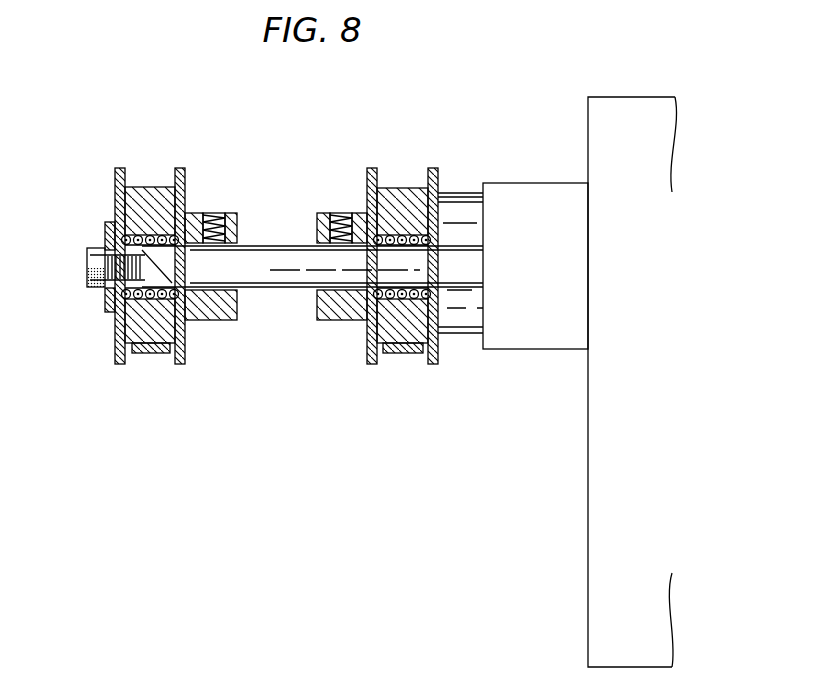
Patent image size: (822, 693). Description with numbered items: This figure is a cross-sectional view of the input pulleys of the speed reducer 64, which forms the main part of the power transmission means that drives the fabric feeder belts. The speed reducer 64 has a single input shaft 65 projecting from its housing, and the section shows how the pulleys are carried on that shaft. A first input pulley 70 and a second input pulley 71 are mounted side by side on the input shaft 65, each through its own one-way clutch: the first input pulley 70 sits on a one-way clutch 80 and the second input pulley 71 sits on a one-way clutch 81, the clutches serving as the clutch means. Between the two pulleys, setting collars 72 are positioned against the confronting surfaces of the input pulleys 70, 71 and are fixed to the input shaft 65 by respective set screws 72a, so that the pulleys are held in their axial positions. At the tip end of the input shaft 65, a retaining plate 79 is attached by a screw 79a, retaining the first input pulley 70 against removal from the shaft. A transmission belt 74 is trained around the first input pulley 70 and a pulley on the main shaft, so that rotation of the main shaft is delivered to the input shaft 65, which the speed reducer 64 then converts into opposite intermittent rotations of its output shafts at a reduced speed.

The speed reducer 64 is at (582, 454).
The input shaft 65 is at (279, 288).
The first input pulley 70 is at (147, 187).
The second input pulley 71 is at (400, 188).
The setting collar 72 is at (218, 320).
The set screw 72a is at (216, 213).
The transmission belt 74 is at (147, 355).
The retaining plate 79 is at (105, 232).
The screw 79a is at (87, 262).
The one-way clutch 80 is at (125, 306).
The one-way clutch 81 is at (385, 302).